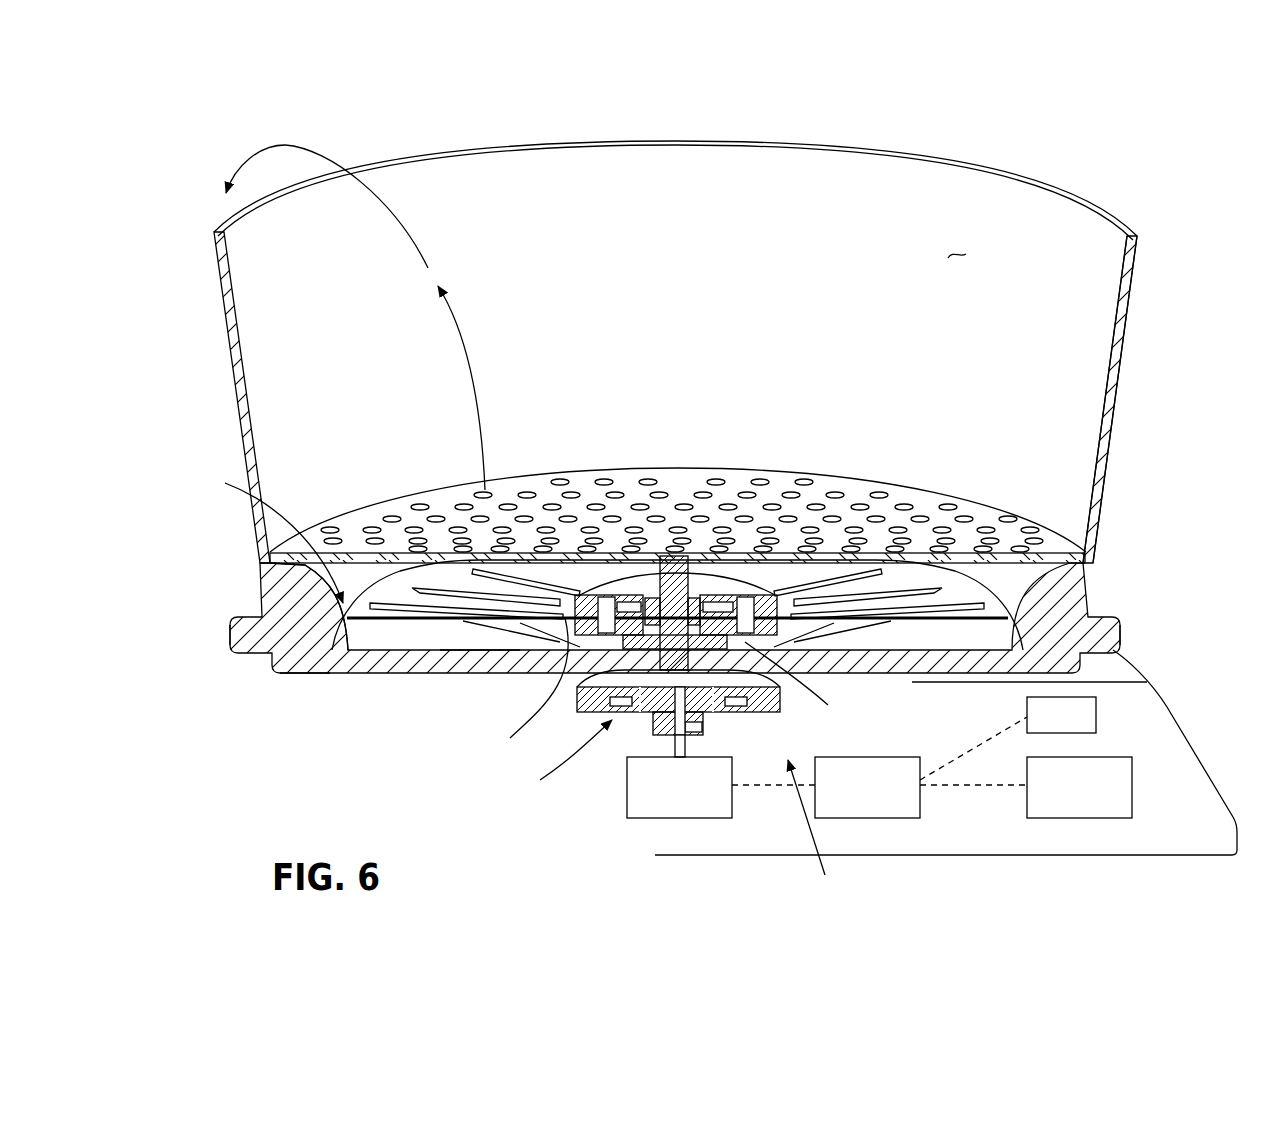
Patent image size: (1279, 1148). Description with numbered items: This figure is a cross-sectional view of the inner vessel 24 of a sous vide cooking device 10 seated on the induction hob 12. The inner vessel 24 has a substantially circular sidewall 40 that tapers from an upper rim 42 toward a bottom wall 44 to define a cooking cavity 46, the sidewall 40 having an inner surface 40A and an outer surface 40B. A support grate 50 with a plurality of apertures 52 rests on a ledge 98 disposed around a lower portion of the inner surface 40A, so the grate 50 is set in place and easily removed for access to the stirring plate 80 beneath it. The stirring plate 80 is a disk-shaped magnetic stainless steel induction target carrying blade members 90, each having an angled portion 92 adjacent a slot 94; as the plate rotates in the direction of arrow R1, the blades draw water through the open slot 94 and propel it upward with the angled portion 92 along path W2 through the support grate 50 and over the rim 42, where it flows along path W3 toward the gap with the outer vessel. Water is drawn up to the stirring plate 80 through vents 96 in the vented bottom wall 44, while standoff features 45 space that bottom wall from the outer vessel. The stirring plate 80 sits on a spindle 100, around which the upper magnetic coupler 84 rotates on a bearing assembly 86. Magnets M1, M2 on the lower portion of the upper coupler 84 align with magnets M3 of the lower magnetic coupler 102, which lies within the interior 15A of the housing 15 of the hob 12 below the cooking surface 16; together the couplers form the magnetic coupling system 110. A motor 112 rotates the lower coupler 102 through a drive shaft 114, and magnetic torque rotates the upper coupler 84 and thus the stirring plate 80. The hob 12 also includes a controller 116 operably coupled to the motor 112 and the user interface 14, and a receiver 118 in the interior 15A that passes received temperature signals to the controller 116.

The sous vide cooking device 10 is at (1130, 558).
The induction hob 12 is at (1157, 665).
The user interface 14 is at (1076, 820).
The housing 15 is at (1014, 855).
The interior of the housing 15A is at (756, 770).
The cooking surface 16 is at (1121, 663).
The inner vessel 24 is at (1146, 305).
The sidewall 40 is at (1126, 410).
The inner surface of sidewall 40A is at (1108, 262).
The outer surface of sidewall 40B is at (1118, 372).
The upper rim 42 is at (1085, 187).
The bottom wall 44 is at (362, 676).
The standoff features 45 is at (1104, 614).
The cooking cavity 46 is at (956, 255).
The support grate 50 is at (1050, 543).
The apertures 52 is at (967, 517).
The stirring plate 80 is at (493, 628).
The upper magnetic coupler 84 is at (624, 585).
The bearing assembly 86 is at (652, 588).
The blade members 90 is at (442, 562).
The angled portion 92 is at (467, 575).
The slot 94 is at (323, 677).
The vents 96 is at (443, 645).
The ledge 98 is at (335, 575).
The spindle 100 is at (694, 585).
The lower magnetic coupler 102 is at (608, 723).
The magnetic coupling system 110 is at (815, 832).
The motor 112 is at (627, 800).
The drive shaft 114 is at (685, 745).
The controller 116 is at (870, 803).
The receiver 118 is at (1085, 715).
The magnet M1 is at (524, 688).
The magnet M2 is at (800, 683).
The magnet M3 is at (560, 762).
The rotation direction R1 is at (269, 534).
The water circulation path W2 is at (474, 383).
The water circulation path W3 is at (285, 145).